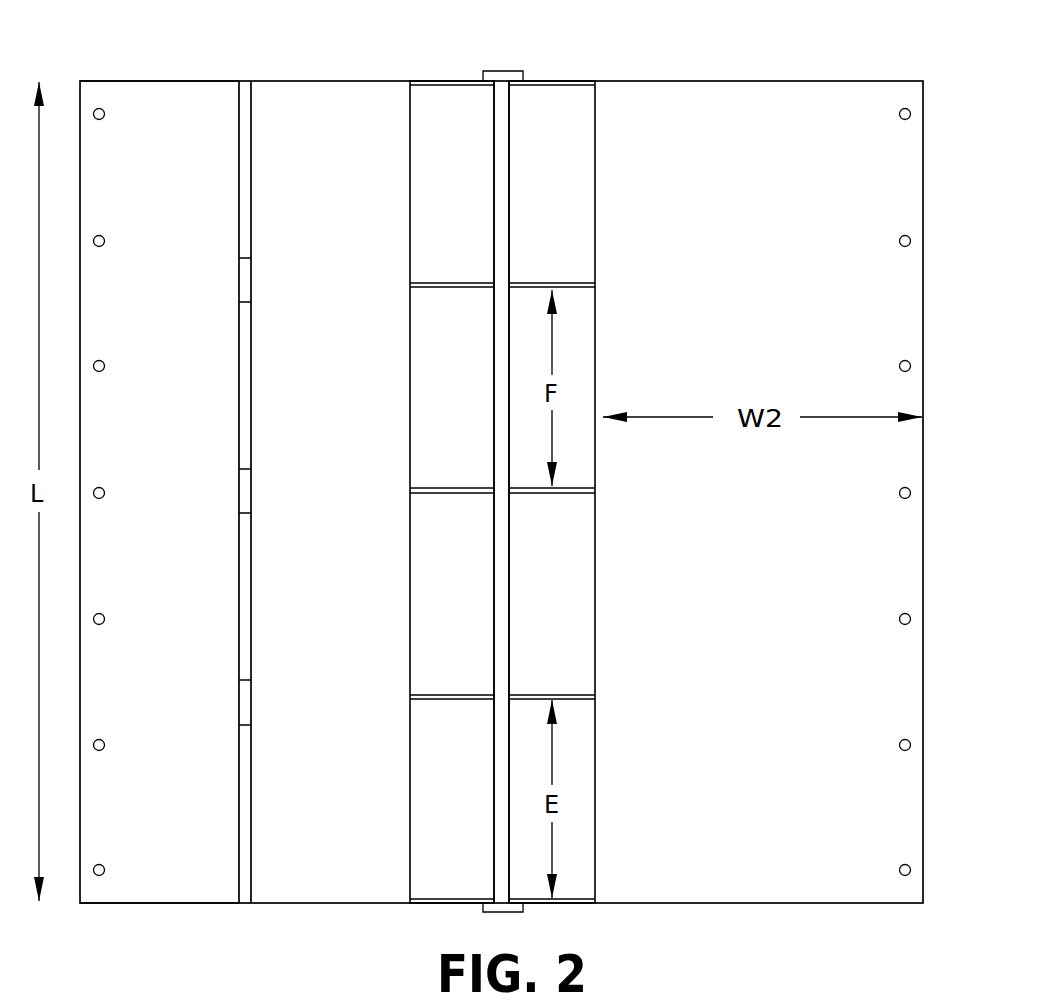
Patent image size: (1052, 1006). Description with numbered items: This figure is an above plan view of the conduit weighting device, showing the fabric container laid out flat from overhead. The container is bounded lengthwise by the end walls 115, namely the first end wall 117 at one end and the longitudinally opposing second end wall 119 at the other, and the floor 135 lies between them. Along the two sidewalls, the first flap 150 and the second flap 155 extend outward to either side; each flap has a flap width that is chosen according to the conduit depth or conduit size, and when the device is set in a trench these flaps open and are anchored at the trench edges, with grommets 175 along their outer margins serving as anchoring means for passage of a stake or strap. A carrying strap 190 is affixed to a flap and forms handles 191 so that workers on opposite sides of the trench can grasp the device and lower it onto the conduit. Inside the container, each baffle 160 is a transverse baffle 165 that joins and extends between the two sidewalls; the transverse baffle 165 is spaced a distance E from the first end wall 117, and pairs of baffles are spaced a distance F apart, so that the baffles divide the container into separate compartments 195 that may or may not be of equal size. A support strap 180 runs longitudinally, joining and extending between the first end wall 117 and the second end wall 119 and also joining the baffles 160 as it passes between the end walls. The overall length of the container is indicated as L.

The first flap 150 is at (923, 147).
The second flap 155 is at (80, 147).
The grommet 175 is at (899, 870).
The carrying strap 190 is at (169, 520).
The handle 191 is at (246, 702).
The end walls 115 is at (498, 480).
The first end wall 117 is at (382, 480).
The second end wall 119 is at (547, 81).
The baffle 160 is at (382, 452).
The transverse baffle 165 is at (452, 492).
The floor 135 is at (478, 596).
The compartments 195 is at (452, 799).
The support strap 180 is at (502, 135).